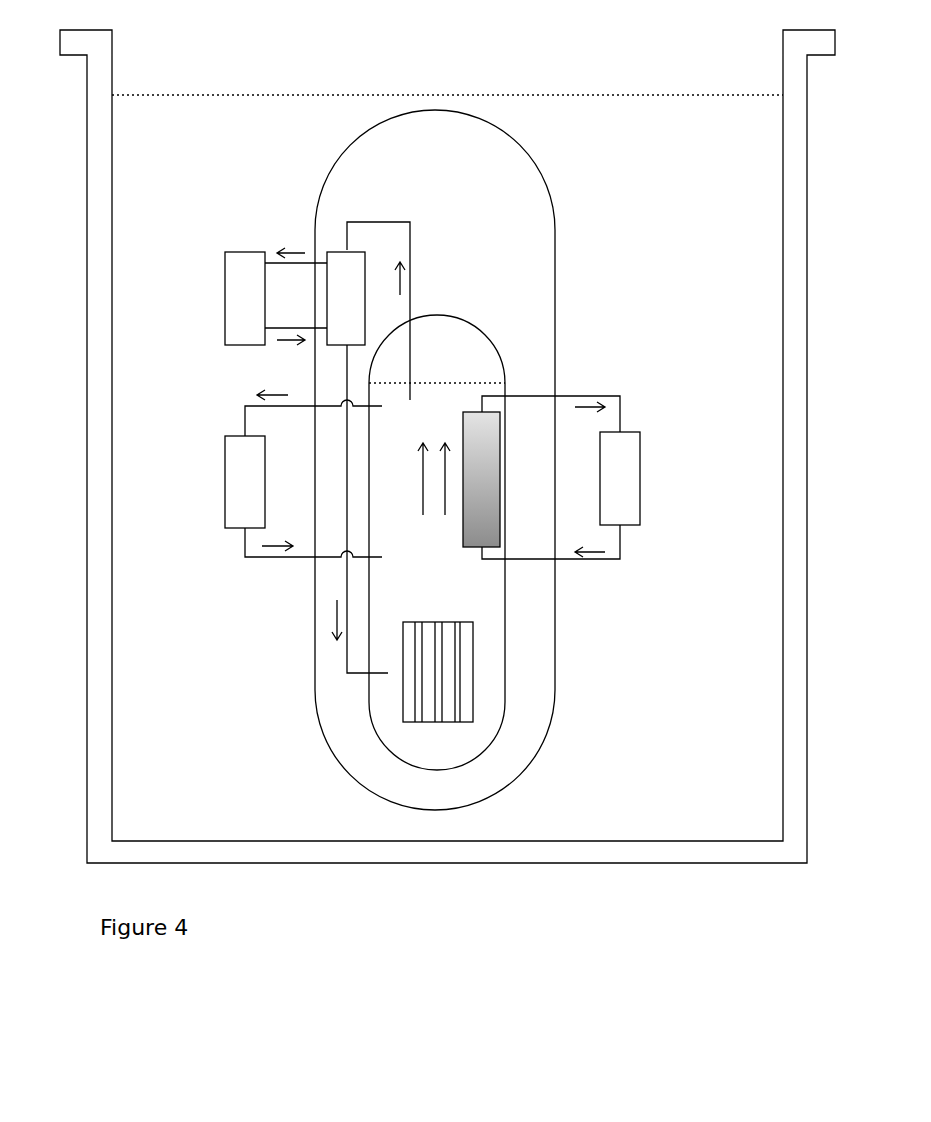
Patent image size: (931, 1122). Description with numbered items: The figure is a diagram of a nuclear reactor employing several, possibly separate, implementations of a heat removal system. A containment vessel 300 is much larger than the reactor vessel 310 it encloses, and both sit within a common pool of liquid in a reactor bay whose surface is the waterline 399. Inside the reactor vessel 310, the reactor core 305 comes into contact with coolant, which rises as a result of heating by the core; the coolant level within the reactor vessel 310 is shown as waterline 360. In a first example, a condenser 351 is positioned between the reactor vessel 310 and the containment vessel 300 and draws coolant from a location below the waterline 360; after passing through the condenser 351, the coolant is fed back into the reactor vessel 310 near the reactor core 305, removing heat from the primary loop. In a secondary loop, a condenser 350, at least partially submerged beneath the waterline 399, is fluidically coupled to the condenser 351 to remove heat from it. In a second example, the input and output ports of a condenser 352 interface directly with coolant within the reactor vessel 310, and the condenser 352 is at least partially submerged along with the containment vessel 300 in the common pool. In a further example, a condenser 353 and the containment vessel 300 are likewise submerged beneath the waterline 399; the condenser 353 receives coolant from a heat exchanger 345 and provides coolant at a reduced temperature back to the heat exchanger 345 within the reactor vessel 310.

The containment vessel 300 is at (545, 755).
The reactor core 305 is at (403, 705).
The reactor vessel 310 is at (505, 676).
The heat exchanger 345 is at (490, 547).
The condenser 350 is at (225, 300).
The condenser 351 is at (327, 313).
The condenser 352 is at (225, 490).
The condenser 353 is at (640, 498).
The waterline 360 is at (438, 372).
The waterline 399 is at (343, 95).